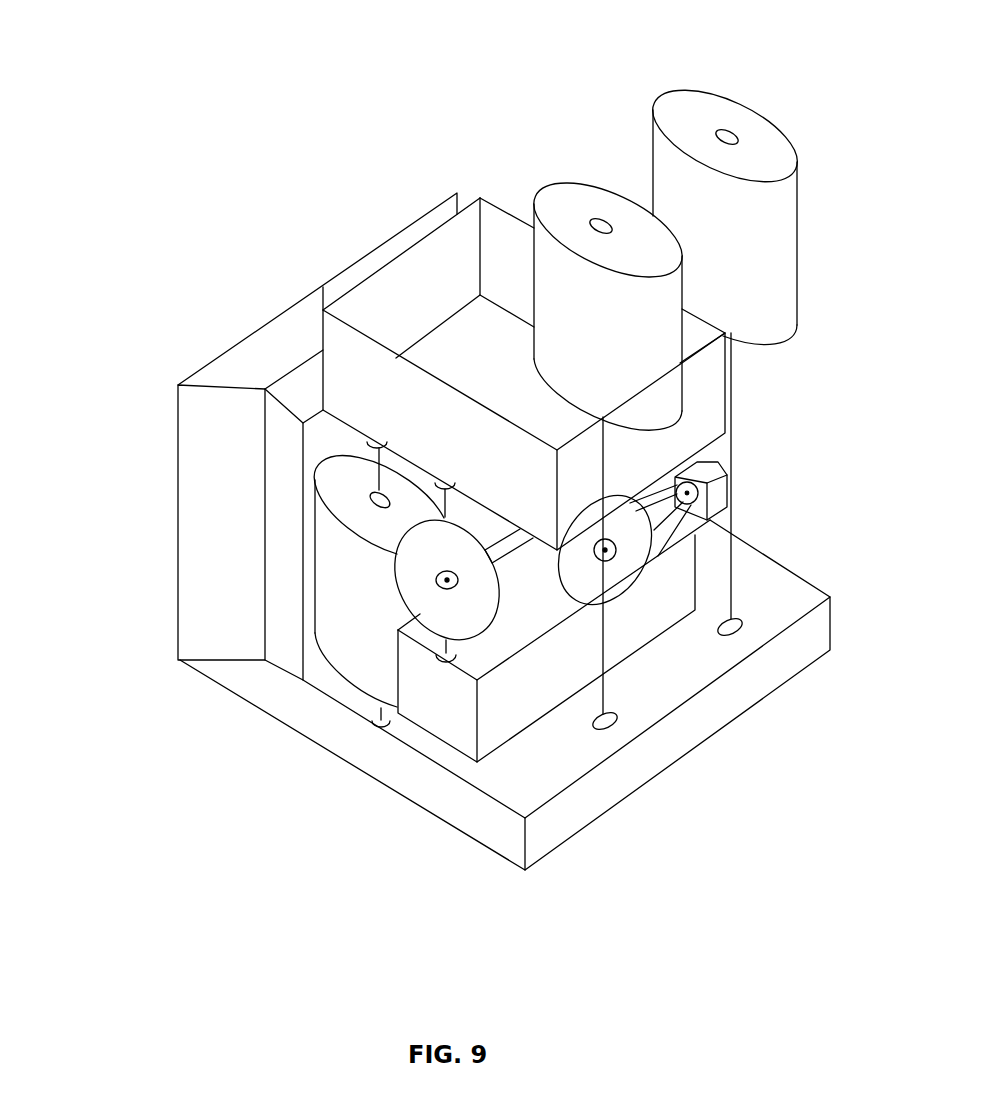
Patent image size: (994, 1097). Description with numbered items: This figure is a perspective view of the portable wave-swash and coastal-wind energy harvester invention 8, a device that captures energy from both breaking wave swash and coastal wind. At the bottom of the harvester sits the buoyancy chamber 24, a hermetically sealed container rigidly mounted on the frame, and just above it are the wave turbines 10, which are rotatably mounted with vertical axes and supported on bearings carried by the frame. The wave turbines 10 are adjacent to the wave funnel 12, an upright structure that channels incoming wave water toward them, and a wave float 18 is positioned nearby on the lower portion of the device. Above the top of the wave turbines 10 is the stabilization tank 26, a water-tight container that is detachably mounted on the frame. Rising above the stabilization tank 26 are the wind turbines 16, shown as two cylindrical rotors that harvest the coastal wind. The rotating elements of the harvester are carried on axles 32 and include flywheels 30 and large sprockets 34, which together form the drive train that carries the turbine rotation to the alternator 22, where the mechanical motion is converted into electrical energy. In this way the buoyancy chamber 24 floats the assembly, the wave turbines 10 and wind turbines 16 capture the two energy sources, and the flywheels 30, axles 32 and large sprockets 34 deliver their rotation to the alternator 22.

The portable wave-swash & coastal-wind energy harvester invention 8 is at (343, 223).
The wave turbines 10 is at (342, 682).
The wave funnel 12 is at (222, 352).
The wind turbines 16 is at (534, 200).
The wave float 18 is at (443, 740).
The alternator 22 is at (727, 466).
The buoyancy chamber 24 is at (480, 838).
The stabilization tank 26 is at (335, 297).
The flywheels 30 is at (500, 597).
The axles 32 is at (495, 542).
The large sprockets 34 is at (632, 600).